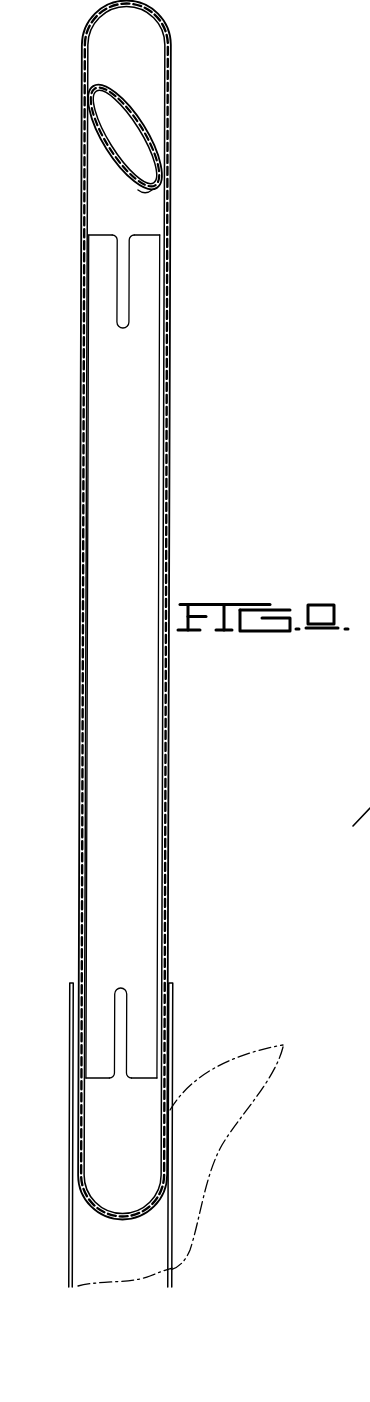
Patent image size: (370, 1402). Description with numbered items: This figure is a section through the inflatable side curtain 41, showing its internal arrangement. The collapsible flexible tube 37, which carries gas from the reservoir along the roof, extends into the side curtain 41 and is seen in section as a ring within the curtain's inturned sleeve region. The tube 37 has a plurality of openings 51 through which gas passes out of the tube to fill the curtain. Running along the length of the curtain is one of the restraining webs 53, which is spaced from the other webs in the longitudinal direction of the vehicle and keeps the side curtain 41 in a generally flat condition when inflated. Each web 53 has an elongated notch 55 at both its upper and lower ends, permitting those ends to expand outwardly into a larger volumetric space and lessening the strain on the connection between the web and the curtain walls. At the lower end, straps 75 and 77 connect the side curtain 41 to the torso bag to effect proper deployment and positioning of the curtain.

The collapsible flexible tube 37 is at (137, 120).
The inflatable side curtain 41 is at (173, 348).
The openings 51 is at (146, 194).
The restraining webs 53 is at (135, 477).
The elongated notch 55 is at (122, 278).
The strap 75 is at (72, 1230).
The strap 77 is at (155, 1272).